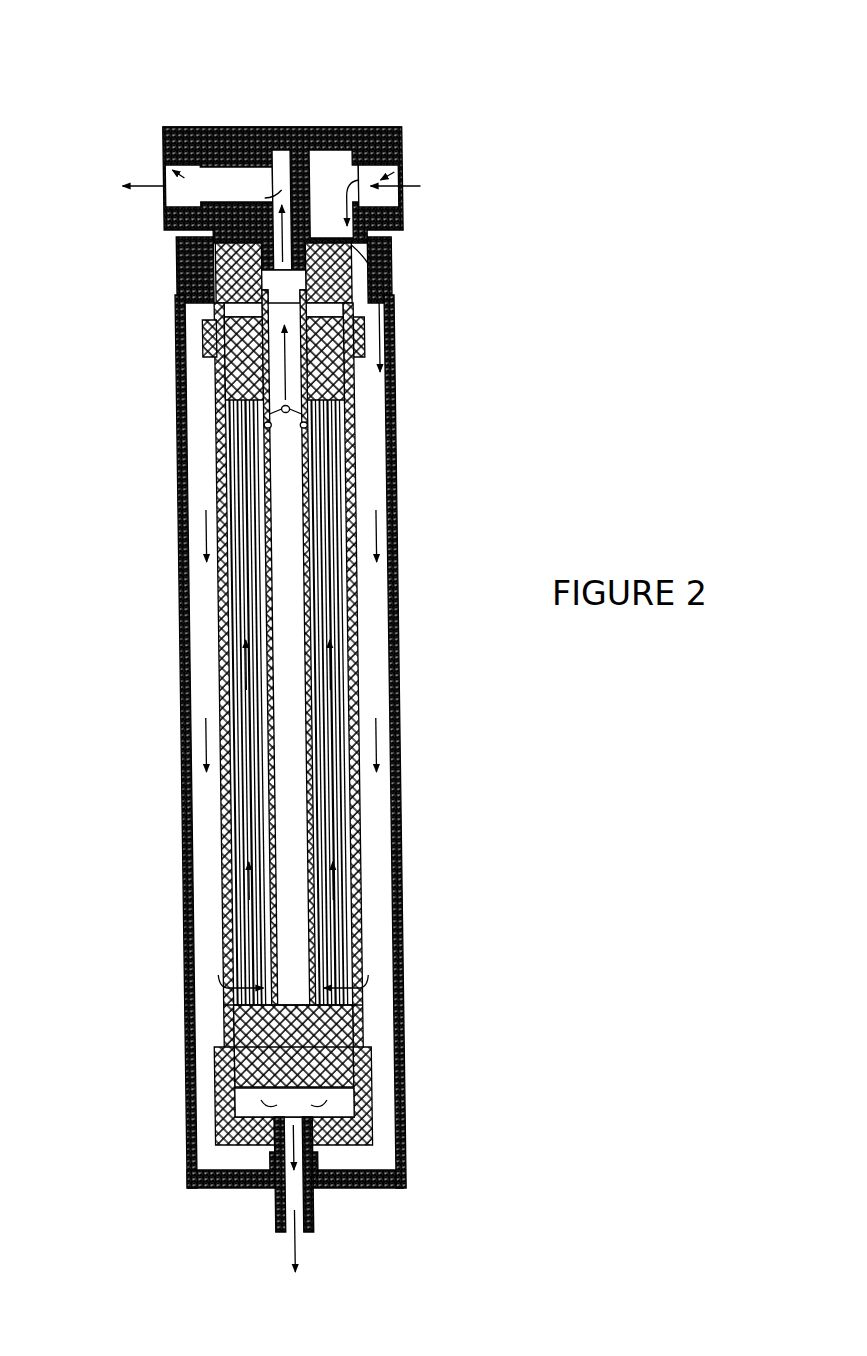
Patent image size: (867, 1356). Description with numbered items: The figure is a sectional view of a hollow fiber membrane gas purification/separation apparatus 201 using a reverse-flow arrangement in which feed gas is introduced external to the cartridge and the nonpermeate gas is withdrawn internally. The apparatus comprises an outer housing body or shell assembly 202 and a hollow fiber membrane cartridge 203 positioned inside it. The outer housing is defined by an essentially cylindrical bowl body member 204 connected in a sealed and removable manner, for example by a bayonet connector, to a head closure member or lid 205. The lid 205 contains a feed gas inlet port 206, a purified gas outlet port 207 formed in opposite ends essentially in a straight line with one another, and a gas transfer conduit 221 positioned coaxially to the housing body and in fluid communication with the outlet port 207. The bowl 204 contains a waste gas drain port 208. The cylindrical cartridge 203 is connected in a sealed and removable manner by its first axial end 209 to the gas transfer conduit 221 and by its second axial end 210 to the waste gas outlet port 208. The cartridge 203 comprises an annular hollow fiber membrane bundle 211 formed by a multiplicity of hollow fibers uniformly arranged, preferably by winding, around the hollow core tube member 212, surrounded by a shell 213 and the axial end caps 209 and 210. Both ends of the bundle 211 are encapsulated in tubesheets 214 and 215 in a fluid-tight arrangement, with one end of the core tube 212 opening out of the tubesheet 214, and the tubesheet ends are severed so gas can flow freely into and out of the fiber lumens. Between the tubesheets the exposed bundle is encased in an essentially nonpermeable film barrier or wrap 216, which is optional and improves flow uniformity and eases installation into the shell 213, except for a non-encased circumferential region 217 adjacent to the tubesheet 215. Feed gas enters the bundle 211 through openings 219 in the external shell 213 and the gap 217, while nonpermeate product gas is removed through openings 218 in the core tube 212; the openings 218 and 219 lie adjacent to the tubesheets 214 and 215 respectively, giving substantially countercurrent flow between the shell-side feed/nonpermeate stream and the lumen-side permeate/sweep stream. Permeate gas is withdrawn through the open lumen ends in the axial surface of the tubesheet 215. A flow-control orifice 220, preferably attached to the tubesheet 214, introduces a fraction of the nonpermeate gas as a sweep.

The gas purification apparatus 201 is at (339, 80).
The shell assembly 202 is at (422, 517).
The hollow fiber membrane cartridge 203 is at (372, 648).
The bowl body member 204 is at (397, 767).
The lid 205 is at (400, 128).
The feed gas inlet port 206 is at (400, 168).
The purified gas outlet port 207 is at (165, 165).
The waste gas drain port 208 is at (303, 1221).
The first axial end 209 is at (380, 240).
The second axial end 210 is at (223, 1148).
The hollow fiber membrane bundle 211 is at (327, 455).
The hollow core tube member 212 is at (287, 603).
The shell 213 is at (359, 597).
The tubesheet 214 is at (330, 352).
The tubesheet 215 is at (370, 1067).
The wrap 216 is at (343, 693).
The non-encased circumferential region 217 is at (345, 973).
The openings 218 is at (258, 431).
The openings 219 is at (364, 1003).
The flow-control orifice 220 is at (227, 353).
The gas transfer conduit 221 is at (227, 270).